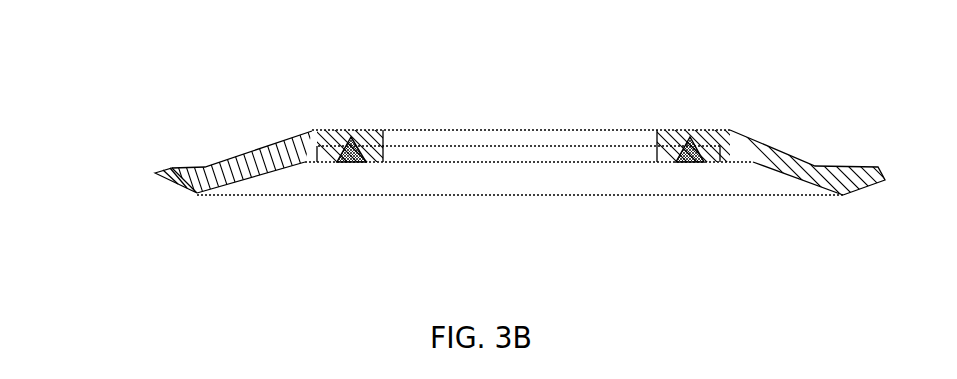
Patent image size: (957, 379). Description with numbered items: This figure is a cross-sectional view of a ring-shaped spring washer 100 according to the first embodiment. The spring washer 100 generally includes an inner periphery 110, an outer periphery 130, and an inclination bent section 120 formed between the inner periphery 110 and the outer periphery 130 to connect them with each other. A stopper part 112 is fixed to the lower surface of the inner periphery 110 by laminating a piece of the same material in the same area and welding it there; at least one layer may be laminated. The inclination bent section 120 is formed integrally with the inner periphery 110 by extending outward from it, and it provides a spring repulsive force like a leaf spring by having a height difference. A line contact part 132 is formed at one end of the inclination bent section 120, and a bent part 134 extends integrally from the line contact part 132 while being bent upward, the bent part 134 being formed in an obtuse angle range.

The spring washer 100 is at (207, 85).
The inner periphery 110 is at (400, 119).
The stopper part 112 is at (360, 163).
The inclination bent section 120 is at (258, 168).
The outer periphery 130 is at (132, 173).
The line contact part 132 is at (199, 196).
The bent part 134 is at (173, 168).